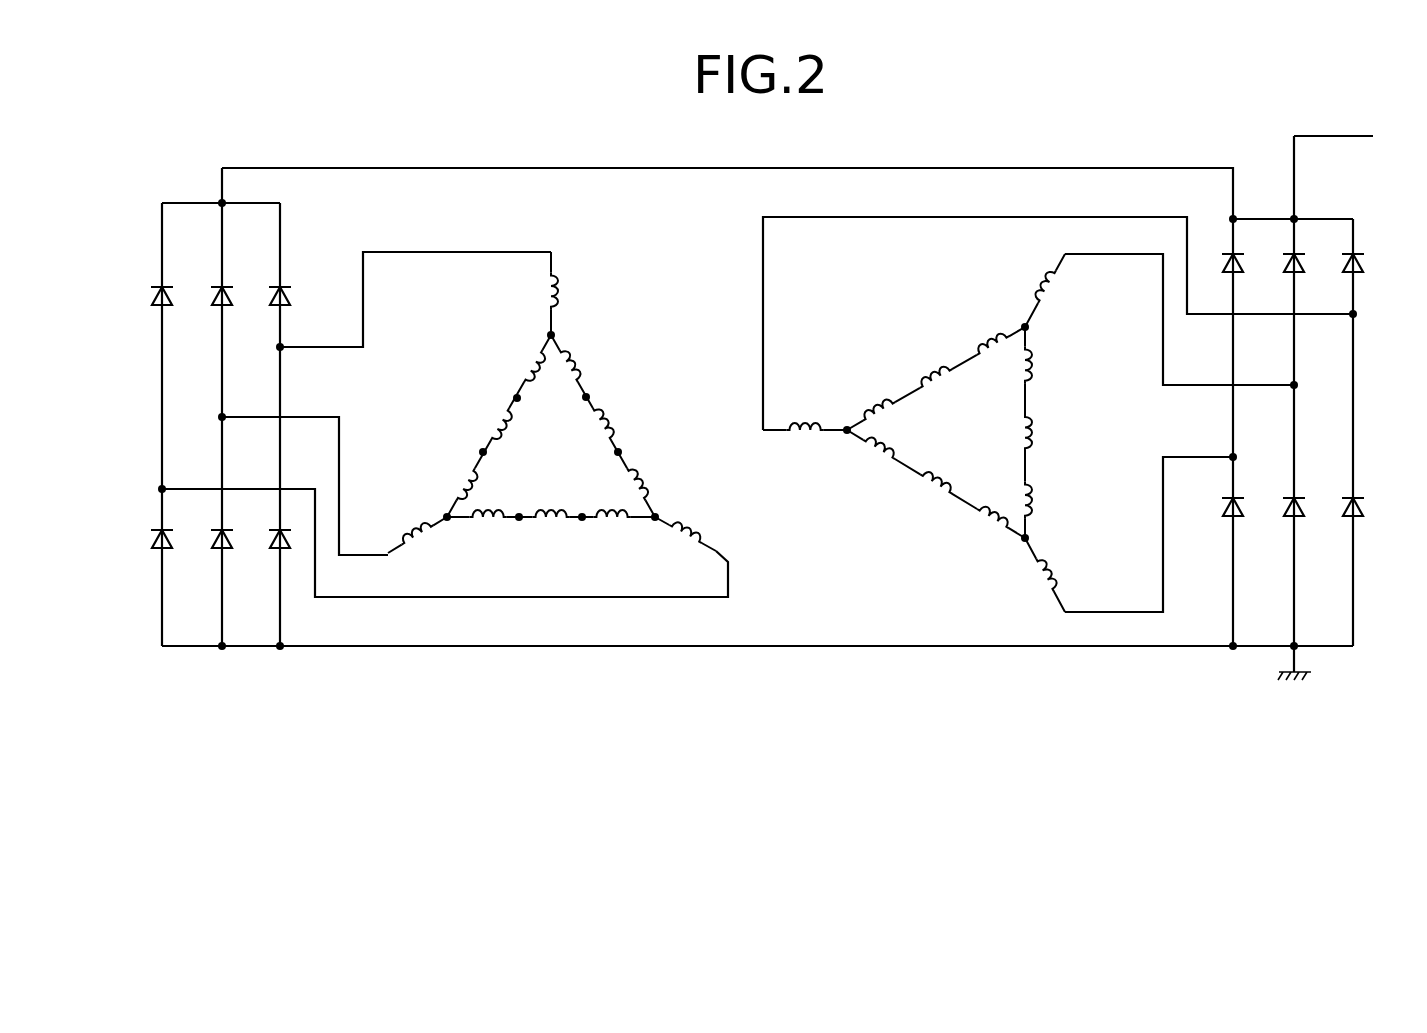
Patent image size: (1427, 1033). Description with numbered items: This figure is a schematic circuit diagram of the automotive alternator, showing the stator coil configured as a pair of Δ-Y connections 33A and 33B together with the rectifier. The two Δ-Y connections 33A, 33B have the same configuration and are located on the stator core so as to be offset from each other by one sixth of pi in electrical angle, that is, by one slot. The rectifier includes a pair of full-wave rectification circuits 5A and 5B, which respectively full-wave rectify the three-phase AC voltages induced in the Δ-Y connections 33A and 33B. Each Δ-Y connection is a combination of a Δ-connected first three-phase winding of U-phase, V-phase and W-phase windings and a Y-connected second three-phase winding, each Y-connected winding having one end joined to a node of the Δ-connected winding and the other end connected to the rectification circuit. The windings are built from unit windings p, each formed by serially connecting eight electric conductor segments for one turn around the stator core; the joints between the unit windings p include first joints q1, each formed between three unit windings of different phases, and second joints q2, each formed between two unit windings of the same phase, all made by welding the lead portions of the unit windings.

The full-wave rectification circuit 5A is at (200, 200).
The full-wave rectification circuit 5B is at (1270, 213).
The Δ-Y connection 33A is at (588, 416).
The Δ-Y connection 33B is at (909, 356).
The unit winding p is at (413, 287).
The first joint q1 is at (551, 335).
The second joint q2 is at (620, 450).